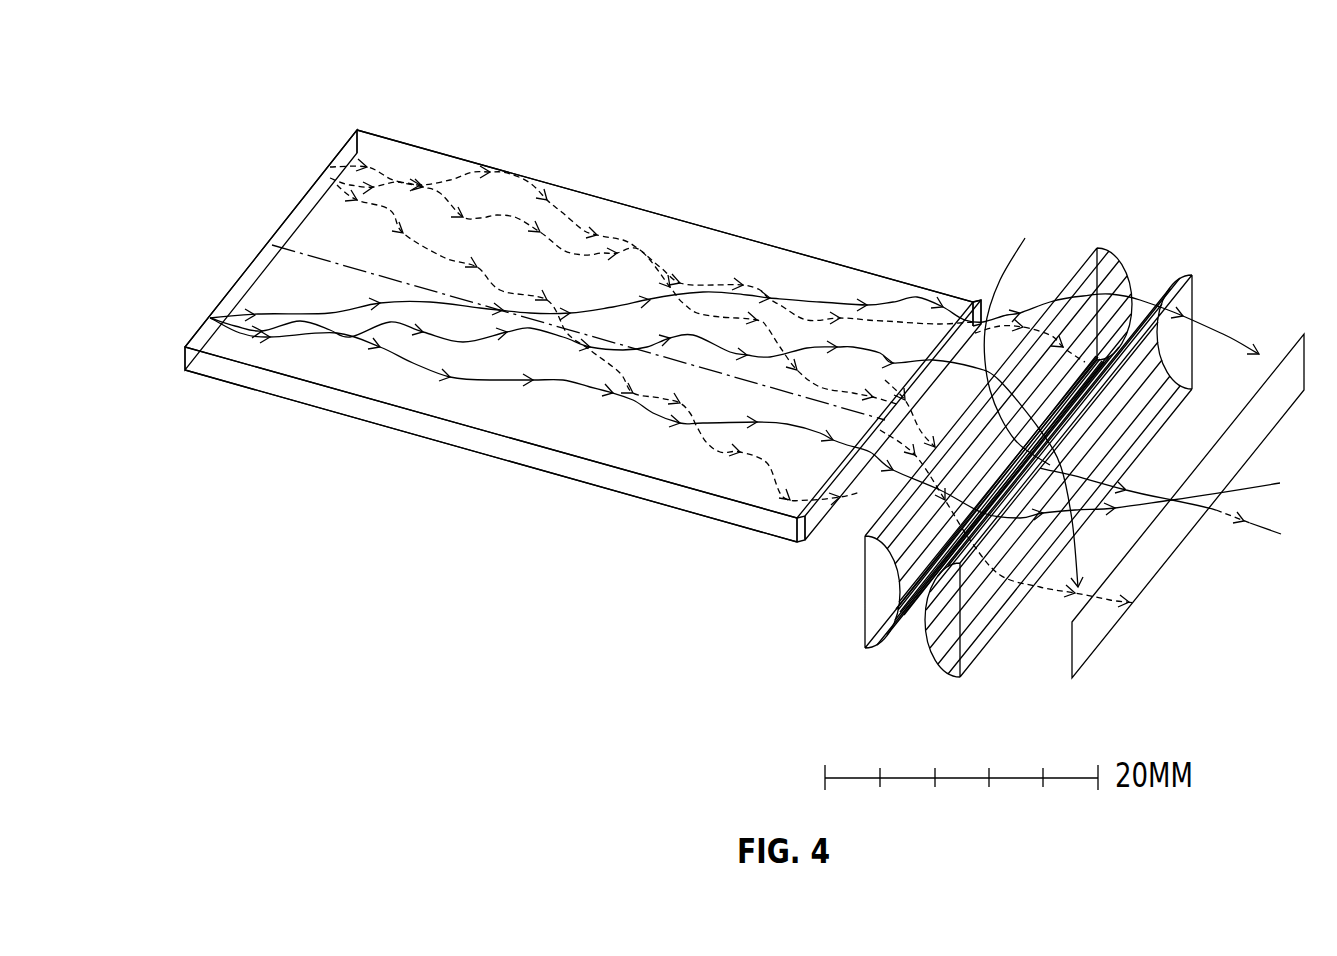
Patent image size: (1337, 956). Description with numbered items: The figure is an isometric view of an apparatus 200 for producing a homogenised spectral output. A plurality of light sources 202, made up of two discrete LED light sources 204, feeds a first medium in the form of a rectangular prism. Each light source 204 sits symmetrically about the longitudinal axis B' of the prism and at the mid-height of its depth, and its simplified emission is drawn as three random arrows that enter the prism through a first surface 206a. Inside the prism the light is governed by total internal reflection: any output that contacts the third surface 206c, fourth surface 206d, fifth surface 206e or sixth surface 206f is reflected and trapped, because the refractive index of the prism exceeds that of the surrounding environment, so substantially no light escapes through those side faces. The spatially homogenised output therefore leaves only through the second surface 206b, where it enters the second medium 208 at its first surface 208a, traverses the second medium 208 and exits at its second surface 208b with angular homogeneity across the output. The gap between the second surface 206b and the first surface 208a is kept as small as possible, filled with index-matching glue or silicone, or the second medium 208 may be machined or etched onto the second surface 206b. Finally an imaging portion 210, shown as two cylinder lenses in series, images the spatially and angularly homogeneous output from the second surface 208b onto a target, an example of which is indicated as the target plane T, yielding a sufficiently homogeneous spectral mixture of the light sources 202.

The apparatus 200 is at (1190, 66).
The plurality of light sources 202 is at (382, 56).
The light source 204 is at (330, 172).
The first surface 206a is at (287, 212).
The second surface 206b is at (800, 532).
The third surface 206c is at (410, 390).
The fourth surface 206d is at (500, 443).
The fifth surface 206e is at (622, 493).
The sixth surface 206f is at (575, 192).
The second medium 208 is at (807, 513).
The first surface of the second medium 208a is at (980, 302).
The second surface of the second medium 208b is at (820, 517).
The imaging portion 210 is at (1137, 210).
The target plane T is at (1287, 362).
The longitudinal axis B' is at (1281, 534).